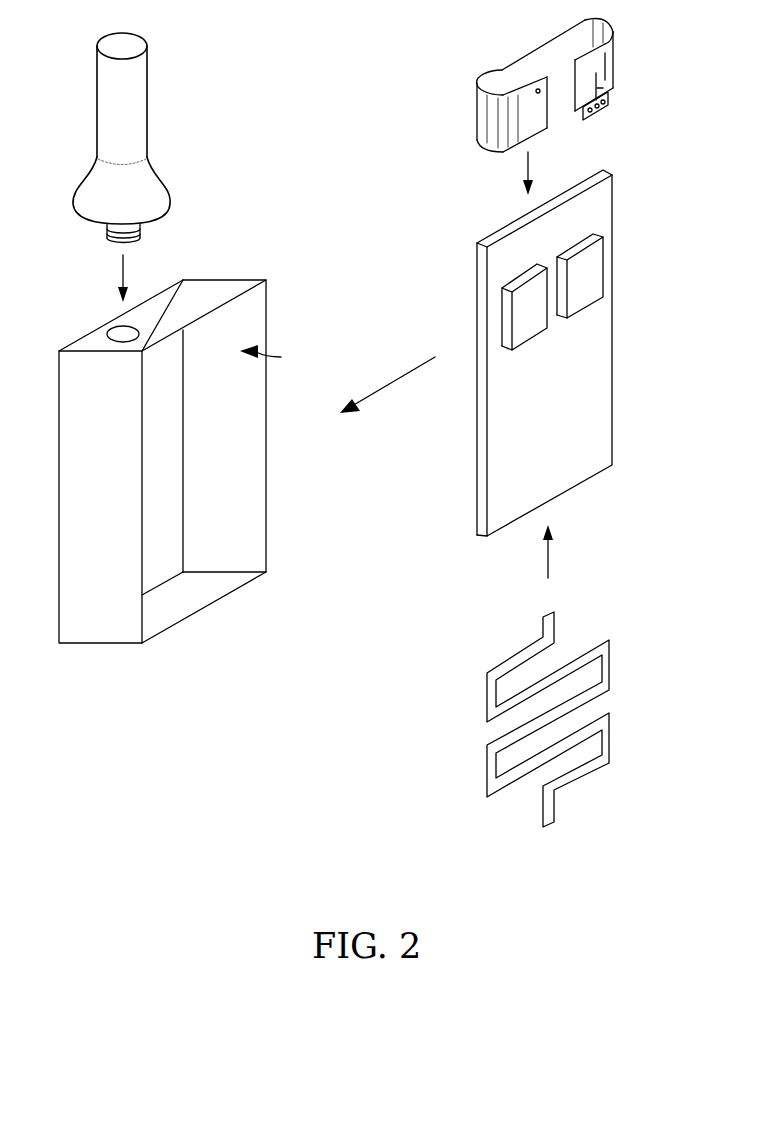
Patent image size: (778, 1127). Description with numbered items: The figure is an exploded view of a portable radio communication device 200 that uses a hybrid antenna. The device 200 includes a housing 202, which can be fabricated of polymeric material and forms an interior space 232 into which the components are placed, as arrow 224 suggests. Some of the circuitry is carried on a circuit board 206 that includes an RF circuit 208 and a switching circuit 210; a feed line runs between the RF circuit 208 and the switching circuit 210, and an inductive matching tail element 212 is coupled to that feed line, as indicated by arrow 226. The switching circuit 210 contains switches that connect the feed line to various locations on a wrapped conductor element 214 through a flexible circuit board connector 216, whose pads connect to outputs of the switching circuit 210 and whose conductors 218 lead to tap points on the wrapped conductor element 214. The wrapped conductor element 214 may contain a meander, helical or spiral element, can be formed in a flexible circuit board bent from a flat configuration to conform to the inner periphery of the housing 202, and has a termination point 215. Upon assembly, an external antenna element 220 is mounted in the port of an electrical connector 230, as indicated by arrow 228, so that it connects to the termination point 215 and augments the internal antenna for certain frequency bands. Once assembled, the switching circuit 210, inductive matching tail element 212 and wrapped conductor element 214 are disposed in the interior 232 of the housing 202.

The portable radio communication device 200 is at (645, 867).
The housing 202 is at (184, 297).
The circuit board 206 is at (612, 418).
The RF circuit 208 is at (528, 343).
The switching circuit 210 is at (580, 313).
The inductive matching tail element 212 is at (610, 662).
The wrapped conductor element 214 is at (483, 117).
The termination point 215 is at (538, 88).
The flexible circuit board connector 216 is at (602, 118).
The conductors 218 is at (606, 58).
The external antenna element 220 is at (148, 78).
The assembly direction arrow 224 is at (385, 390).
The arrow 226 is at (549, 552).
The arrow 228 is at (120, 273).
The electrical connector 230 is at (108, 332).
The interior space 232 is at (280, 356).